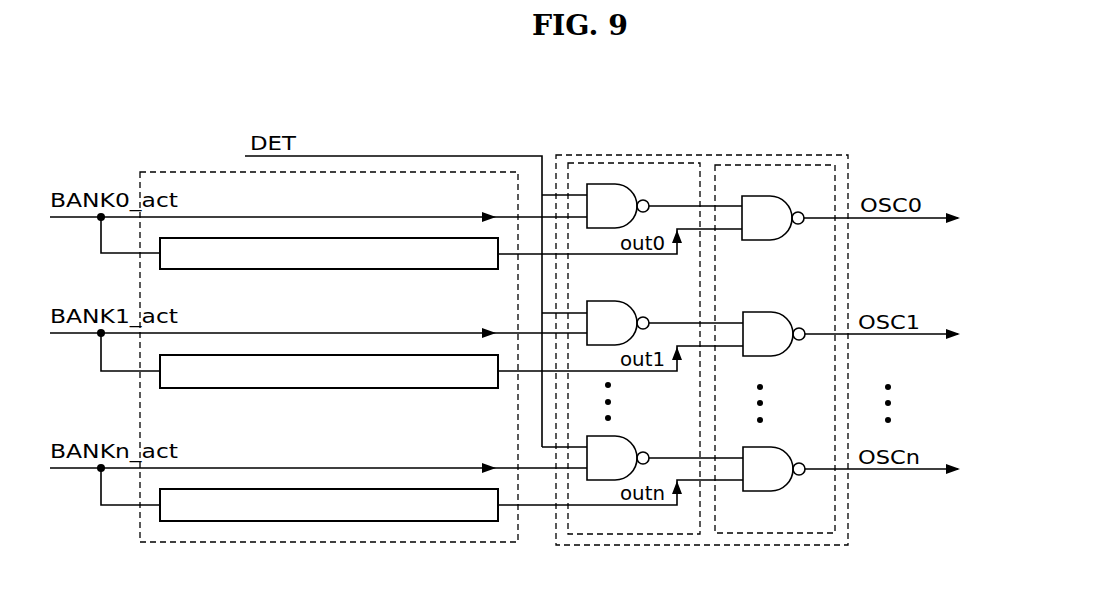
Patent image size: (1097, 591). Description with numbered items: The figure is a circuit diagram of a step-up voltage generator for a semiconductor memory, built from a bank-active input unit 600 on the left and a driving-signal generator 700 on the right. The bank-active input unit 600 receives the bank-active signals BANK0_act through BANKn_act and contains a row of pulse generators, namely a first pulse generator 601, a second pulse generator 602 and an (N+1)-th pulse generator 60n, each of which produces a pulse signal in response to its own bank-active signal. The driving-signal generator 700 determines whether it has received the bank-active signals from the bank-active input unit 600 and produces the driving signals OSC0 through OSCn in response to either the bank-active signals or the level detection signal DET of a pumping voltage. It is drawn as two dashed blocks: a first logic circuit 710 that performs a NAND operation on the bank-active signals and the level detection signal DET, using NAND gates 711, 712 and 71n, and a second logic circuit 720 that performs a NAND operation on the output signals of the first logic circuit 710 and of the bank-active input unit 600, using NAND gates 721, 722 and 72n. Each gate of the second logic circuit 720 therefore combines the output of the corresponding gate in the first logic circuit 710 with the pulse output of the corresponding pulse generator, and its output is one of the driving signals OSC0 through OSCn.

The bank-active input unit 600 is at (467, 171).
The first pulse generator 601 is at (332, 237).
The second pulse generator 602 is at (332, 354).
The (N+1)-th pulse generator 60n is at (332, 488).
The driving-signal generator 700 is at (725, 155).
The first logic circuit 710 is at (668, 163).
The first NAND gate of the first logic circuit 711 is at (612, 184).
The second NAND gate of the first logic circuit 712 is at (637, 301).
The (N+1)-th NAND gate of the first logic circuit 71n is at (637, 436).
The second logic circuit 720 is at (822, 165).
The first NAND gate of the second logic circuit 721 is at (760, 196).
The second NAND gate of the second logic circuit 722 is at (784, 312).
The (N+1)-th NAND gate of the second logic circuit 72n is at (788, 492).